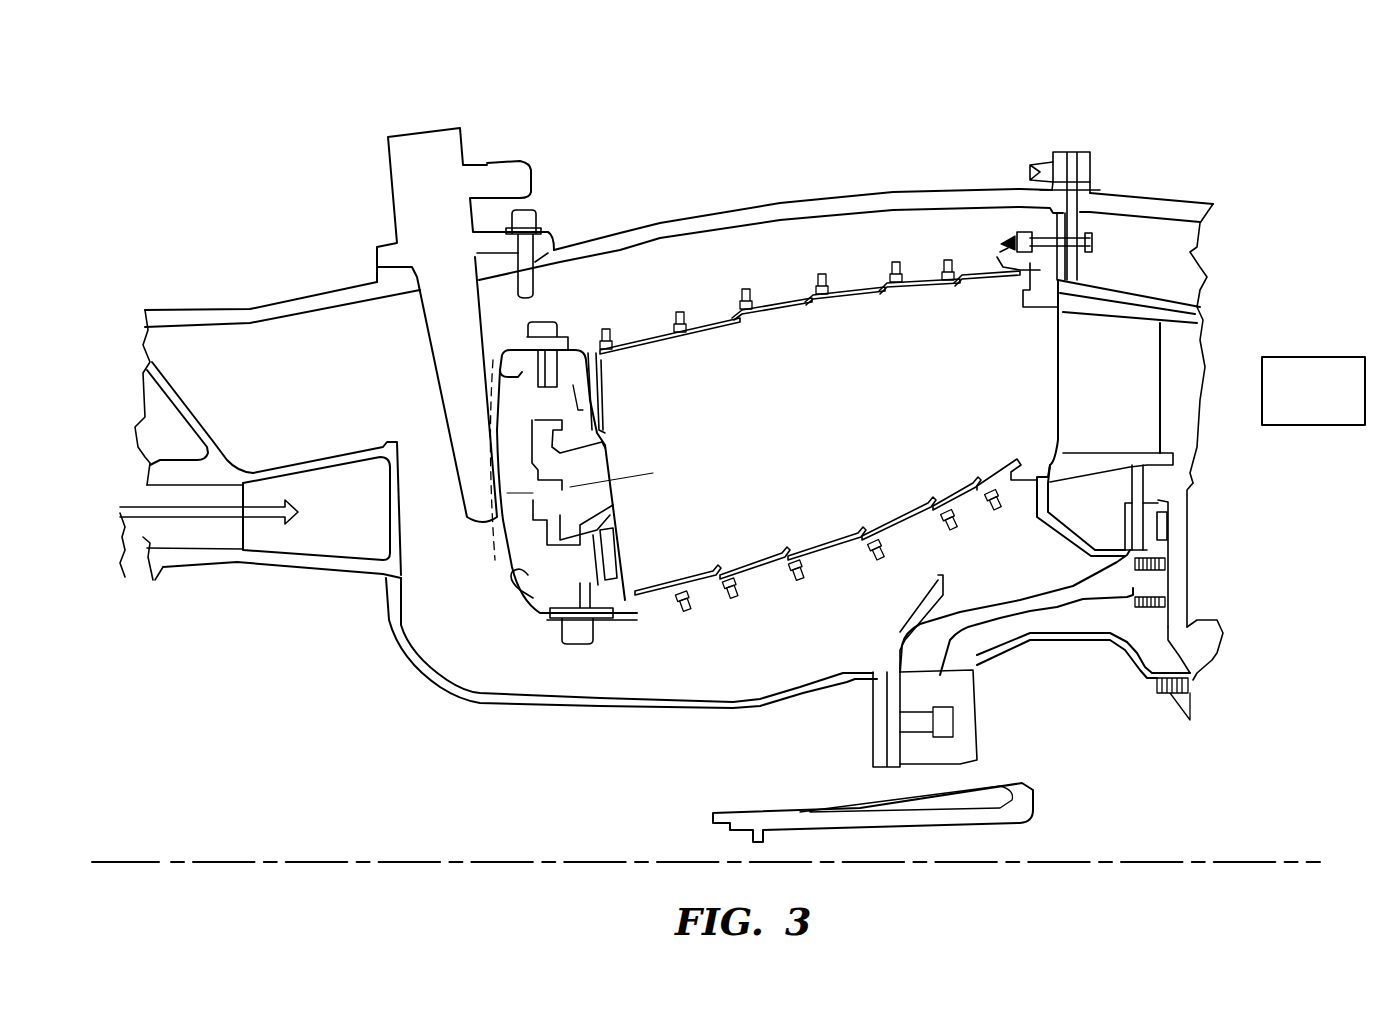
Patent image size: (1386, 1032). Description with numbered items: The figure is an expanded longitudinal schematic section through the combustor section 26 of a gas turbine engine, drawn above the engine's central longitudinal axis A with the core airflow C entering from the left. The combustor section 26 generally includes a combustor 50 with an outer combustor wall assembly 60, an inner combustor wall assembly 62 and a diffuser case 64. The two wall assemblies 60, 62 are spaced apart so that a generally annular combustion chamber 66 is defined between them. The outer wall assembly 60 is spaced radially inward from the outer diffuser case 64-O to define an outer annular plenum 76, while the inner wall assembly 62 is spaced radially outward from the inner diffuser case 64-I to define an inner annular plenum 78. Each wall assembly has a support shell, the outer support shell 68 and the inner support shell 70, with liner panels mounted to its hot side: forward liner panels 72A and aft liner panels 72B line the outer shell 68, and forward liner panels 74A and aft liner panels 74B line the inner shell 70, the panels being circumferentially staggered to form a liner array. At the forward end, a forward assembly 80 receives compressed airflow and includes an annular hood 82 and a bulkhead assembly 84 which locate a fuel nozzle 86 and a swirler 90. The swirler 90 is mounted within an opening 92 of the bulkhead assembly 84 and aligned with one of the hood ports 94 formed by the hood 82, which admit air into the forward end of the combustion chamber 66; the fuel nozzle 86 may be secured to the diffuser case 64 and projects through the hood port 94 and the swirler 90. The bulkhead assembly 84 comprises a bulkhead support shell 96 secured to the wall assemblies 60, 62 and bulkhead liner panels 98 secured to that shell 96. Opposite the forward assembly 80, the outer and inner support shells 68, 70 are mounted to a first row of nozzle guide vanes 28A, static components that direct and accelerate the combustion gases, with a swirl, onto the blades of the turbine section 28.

The combustor section 26 is at (976, 92).
The turbine section 28 is at (1297, 404).
The first row of Nozzle Guide Vanes 28A is at (1085, 397).
The combustor 50 is at (1096, 240).
The outer combustor wall assembly 60 is at (858, 250).
The inner combustor wall assembly 62 is at (916, 528).
The diffuser case 64 is at (990, 178).
The outer diffuser case 64-O is at (777, 202).
The inner diffuser case 64-I is at (708, 712).
The combustion chamber 66 is at (796, 455).
The outer support shell 68 is at (990, 262).
The inner support shell 70 is at (890, 520).
The forward liner panels 72A is at (737, 325).
The aft liner panels 72B is at (915, 292).
The forward liner panels 74A is at (733, 563).
The aft liner panels 74B is at (922, 495).
The outer annular plenum 76 is at (769, 268).
The inner annular plenum 78 is at (746, 670).
The forward assembly 80 is at (518, 628).
The annular hood 82 is at (520, 584).
The bulkhead assembly 84 is at (607, 409).
The fuel nozzle 86 is at (463, 273).
The swirler 90 is at (610, 441).
The opening 92 is at (610, 512).
The hood ports 94 is at (498, 560).
The bulkhead support shell 96 is at (545, 583).
The bulkhead liner panels 98 is at (615, 548).
The core airflow C is at (207, 553).
The engine central longitudinal axis A is at (1245, 858).